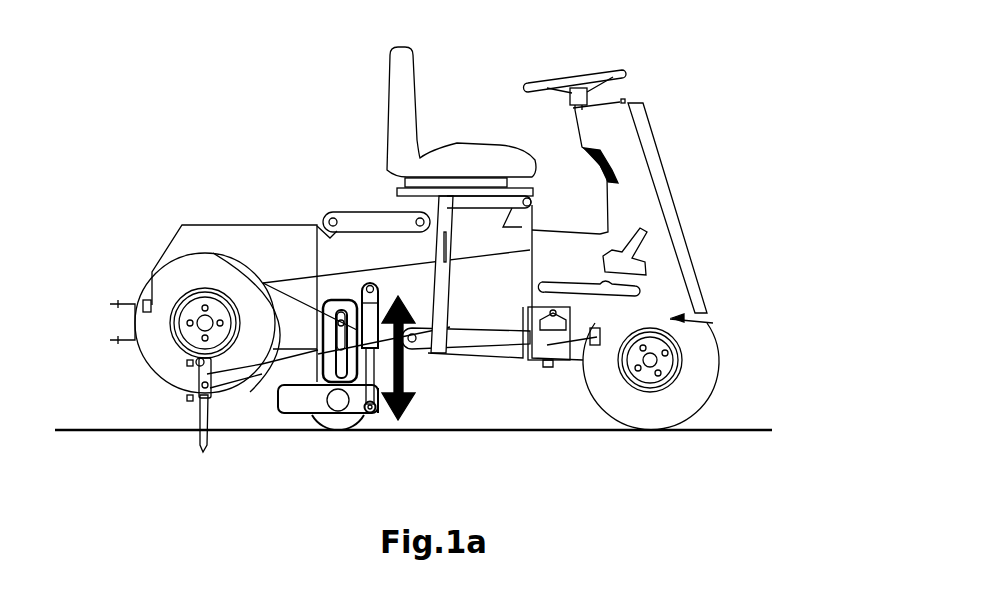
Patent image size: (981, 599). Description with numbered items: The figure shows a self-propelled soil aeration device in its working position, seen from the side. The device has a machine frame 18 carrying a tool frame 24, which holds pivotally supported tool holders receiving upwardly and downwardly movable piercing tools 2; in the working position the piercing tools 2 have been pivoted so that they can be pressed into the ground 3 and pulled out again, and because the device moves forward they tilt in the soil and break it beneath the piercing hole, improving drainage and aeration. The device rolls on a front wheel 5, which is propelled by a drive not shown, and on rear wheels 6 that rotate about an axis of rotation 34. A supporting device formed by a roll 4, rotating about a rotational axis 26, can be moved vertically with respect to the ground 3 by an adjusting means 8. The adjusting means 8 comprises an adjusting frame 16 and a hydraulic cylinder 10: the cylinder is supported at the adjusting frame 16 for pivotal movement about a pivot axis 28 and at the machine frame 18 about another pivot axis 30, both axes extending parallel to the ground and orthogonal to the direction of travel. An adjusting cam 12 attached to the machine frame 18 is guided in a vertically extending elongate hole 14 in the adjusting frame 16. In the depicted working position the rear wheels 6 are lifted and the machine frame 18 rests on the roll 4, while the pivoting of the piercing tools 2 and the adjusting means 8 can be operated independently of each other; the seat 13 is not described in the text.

The piercing tool 2 is at (200, 441).
The ground 3 is at (727, 431).
The roll 4 is at (340, 420).
The front wheel 5 is at (647, 410).
The rear wheel 6 is at (157, 343).
The adjusting means 8 is at (375, 432).
The hydraulic cylinder 10 is at (410, 348).
The adjusting cam 12 is at (213, 252).
The driver seat 13 is at (400, 76).
The elongate hole 14 is at (342, 297).
The adjusting frame 16 is at (285, 398).
The machine frame 18 is at (480, 337).
The tool frame 24 is at (253, 245).
The rotational axis 26 is at (338, 400).
The pivot axis 28 is at (372, 422).
The pivot axis 30 is at (370, 278).
The axis of rotation 34 is at (205, 323).